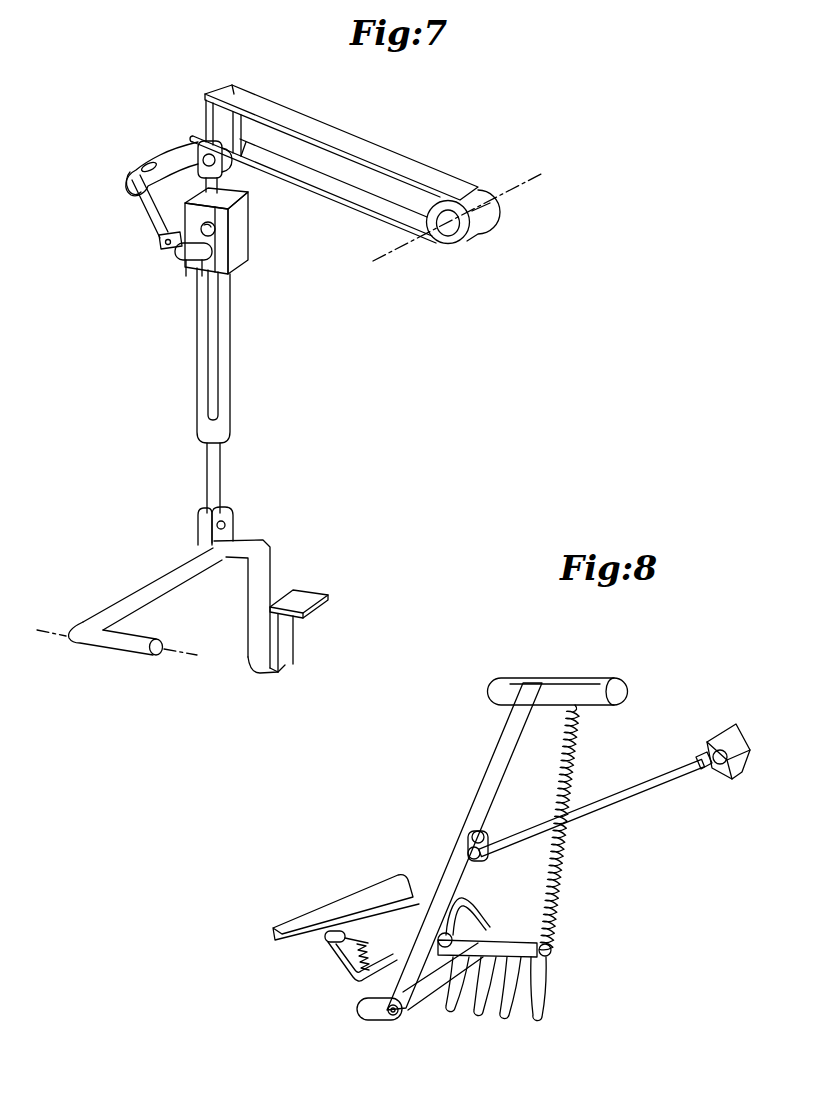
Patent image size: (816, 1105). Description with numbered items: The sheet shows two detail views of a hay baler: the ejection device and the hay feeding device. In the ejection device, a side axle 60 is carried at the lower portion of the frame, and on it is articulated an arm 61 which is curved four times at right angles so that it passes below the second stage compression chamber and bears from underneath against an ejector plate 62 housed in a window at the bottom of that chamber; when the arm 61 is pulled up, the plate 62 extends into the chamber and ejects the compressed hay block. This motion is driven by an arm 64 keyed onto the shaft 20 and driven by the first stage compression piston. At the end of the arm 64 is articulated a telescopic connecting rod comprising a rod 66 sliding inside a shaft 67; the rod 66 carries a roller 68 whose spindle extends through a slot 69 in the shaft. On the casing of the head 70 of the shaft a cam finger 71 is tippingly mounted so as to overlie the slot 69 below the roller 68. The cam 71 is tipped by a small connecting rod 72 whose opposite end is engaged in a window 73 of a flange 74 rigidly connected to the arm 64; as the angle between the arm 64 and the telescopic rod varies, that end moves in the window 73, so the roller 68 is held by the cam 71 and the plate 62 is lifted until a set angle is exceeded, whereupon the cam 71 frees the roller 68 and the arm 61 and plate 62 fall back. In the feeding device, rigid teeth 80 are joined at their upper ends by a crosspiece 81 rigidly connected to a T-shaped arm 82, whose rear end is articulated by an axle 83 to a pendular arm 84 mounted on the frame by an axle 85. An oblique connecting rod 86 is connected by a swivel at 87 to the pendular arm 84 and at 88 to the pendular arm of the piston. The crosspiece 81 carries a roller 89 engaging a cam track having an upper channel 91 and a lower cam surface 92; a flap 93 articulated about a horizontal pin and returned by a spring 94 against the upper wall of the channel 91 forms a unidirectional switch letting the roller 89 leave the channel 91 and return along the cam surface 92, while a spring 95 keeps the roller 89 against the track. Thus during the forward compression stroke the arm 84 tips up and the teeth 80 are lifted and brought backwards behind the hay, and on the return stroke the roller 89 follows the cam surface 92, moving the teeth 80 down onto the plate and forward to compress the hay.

In FIG. 7, the shaft 20 is at (513, 195).
In FIG. 7, the side axle 60 is at (130, 652).
In FIG. 7, the arm 61 is at (190, 567).
In FIG. 7, the ejector plate 62 is at (326, 606).
In FIG. 7, the arm 64 is at (372, 157).
In FIG. 7, the rod 66 is at (221, 488).
In FIG. 7, the shaft 67 is at (229, 388).
In FIG. 7, the roller 68 is at (214, 232).
In FIG. 7, the slot 69 is at (218, 323).
In FIG. 7, the head 70 is at (240, 220).
In FIG. 7, the cam finger 71 is at (183, 260).
In FIG. 7, the small connecting rod 72 is at (150, 226).
In FIG. 7, the window 73 is at (143, 166).
In FIG. 7, the flange 74 is at (171, 152).
In FIG. 8, the rigid teeth 80 is at (545, 985).
In FIG. 8, the crosspiece 81 is at (499, 940).
In FIG. 8, the T-shaped arm 82 is at (432, 990).
In FIG. 8, the axle 83 is at (401, 1020).
In FIG. 8, the pendular arm 84 is at (483, 786).
In FIG. 8, the axle 85 is at (601, 686).
In FIG. 8, the oblique connecting rod 86 is at (653, 788).
In FIG. 8, the swivel 87 is at (486, 835).
In FIG. 8, the swivel 88 is at (730, 778).
In FIG. 8, the roller 89 is at (487, 932).
In FIG. 8, the upper channel 91 is at (389, 898).
In FIG. 8, the lower cam surface 92 is at (340, 970).
In FIG. 8, the flap 93 is at (338, 960).
In FIG. 8, the spring 94 is at (355, 980).
In FIG. 8, the spring 95 is at (552, 868).